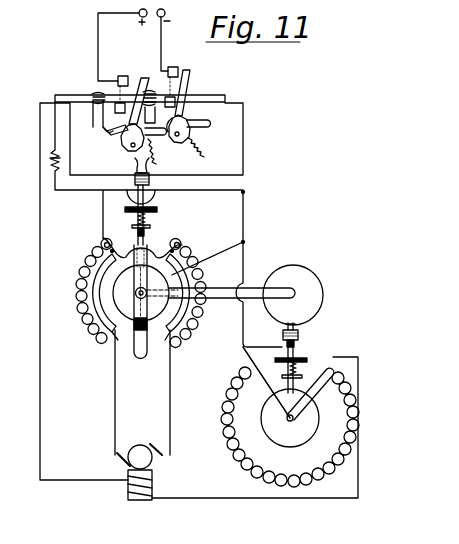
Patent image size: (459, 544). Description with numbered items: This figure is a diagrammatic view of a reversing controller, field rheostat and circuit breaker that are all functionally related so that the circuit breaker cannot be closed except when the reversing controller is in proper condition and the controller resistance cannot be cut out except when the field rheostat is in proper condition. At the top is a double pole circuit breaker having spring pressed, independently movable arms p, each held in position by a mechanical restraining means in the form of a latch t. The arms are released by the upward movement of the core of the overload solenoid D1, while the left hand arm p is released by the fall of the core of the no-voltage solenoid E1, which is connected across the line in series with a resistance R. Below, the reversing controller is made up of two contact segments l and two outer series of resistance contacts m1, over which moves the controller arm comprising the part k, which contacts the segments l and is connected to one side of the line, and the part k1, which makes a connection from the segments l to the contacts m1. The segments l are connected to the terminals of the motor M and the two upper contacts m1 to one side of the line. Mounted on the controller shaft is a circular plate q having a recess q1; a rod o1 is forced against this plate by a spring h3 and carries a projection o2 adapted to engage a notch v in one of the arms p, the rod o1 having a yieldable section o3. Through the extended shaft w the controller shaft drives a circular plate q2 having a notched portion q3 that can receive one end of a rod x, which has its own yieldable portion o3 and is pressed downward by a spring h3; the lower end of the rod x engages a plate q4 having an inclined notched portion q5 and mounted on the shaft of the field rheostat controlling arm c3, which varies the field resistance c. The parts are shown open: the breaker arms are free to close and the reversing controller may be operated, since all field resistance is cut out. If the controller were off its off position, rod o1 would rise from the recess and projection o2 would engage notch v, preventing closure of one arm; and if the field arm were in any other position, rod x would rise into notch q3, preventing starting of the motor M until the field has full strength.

The no-voltage solenoid E1 is at (100, 93).
The overload solenoid D1 is at (153, 94).
The circuit breaker arm p is at (145, 77).
The resistance R is at (52, 162).
The latch t is at (126, 132).
The projection o2 is at (135, 160).
The notch v is at (142, 162).
The yieldable section o3 is at (135, 182).
The rod o1 is at (152, 209).
The spring h3 is at (149, 222).
The controller arm part k is at (103, 236).
The circular plate q is at (141, 293).
The recess q1 is at (143, 293).
The contact segment l is at (60, 292).
The resistance contact m1 is at (90, 330).
The controller arm part k1 is at (128, 350).
The motor M is at (243, 428).
The extended shaft w is at (248, 284).
The circular plate q2 is at (310, 284).
The notched portion q3 is at (298, 326).
The rod x is at (299, 345).
The plate q4 is at (310, 418).
The inclined notched portion q5 is at (272, 389).
The field rheostat controlling arm c3 is at (316, 392).
The field resistance c is at (289, 427).